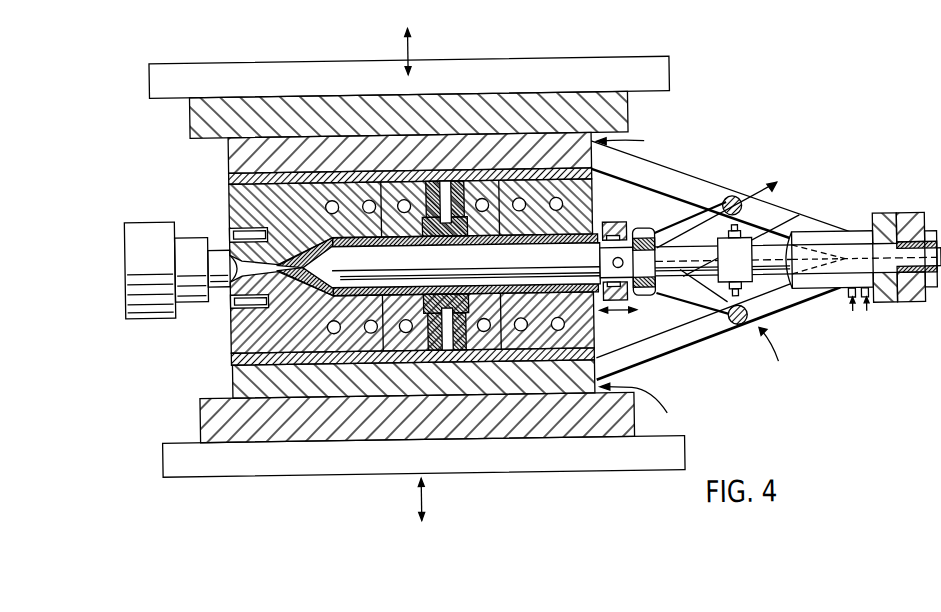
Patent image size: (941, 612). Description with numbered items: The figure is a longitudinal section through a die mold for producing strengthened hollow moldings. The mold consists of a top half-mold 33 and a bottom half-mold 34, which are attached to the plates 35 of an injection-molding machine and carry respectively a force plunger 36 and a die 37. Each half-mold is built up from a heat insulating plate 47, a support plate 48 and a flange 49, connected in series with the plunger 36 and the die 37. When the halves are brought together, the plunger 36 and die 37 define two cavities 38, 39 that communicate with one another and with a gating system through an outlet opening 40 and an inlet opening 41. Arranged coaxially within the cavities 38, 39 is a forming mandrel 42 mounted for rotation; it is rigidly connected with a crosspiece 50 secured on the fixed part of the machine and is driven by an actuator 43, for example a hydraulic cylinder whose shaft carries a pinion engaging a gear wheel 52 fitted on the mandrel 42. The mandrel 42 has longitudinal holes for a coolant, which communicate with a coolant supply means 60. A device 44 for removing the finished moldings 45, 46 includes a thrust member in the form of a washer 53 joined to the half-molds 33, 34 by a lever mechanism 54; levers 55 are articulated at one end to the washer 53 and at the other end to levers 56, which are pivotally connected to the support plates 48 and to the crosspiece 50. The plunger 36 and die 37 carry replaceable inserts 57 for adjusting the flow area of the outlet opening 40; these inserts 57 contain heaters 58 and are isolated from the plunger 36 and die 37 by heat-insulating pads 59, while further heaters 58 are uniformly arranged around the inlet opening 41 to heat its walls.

The top half-mold 33 is at (634, 142).
The bottom half-mold 34 is at (647, 405).
The plates 35 is at (628, 72).
The force plunger 36 is at (230, 175).
The die 37 is at (255, 372).
The cavity 38 is at (372, 352).
The cavity 39 is at (619, 325).
The outlet opening 40 is at (512, 380).
The inlet opening 41 is at (320, 233).
The forming mandrel 42 is at (598, 250).
The actuator 43 is at (852, 237).
The device for removing finished moldings 44 is at (835, 296).
The finished molding 45 is at (379, 160).
The finished molding 46 is at (508, 190).
The heat insulating plates 47 is at (265, 169).
The support plates 48 is at (296, 166).
The flanges 49 is at (321, 110).
The crosspiece 50 is at (920, 308).
The gear wheel 52 is at (668, 228).
The washer 53 is at (634, 232).
The lever mechanism 54 is at (742, 200).
The levers 55 is at (690, 300).
The levers 56 is at (652, 350).
The replaceable inserts 57 is at (452, 180).
The heaters 58 is at (243, 230).
The heat-insulating pads 59 is at (384, 345).
The coolant supply means 60 is at (748, 252).